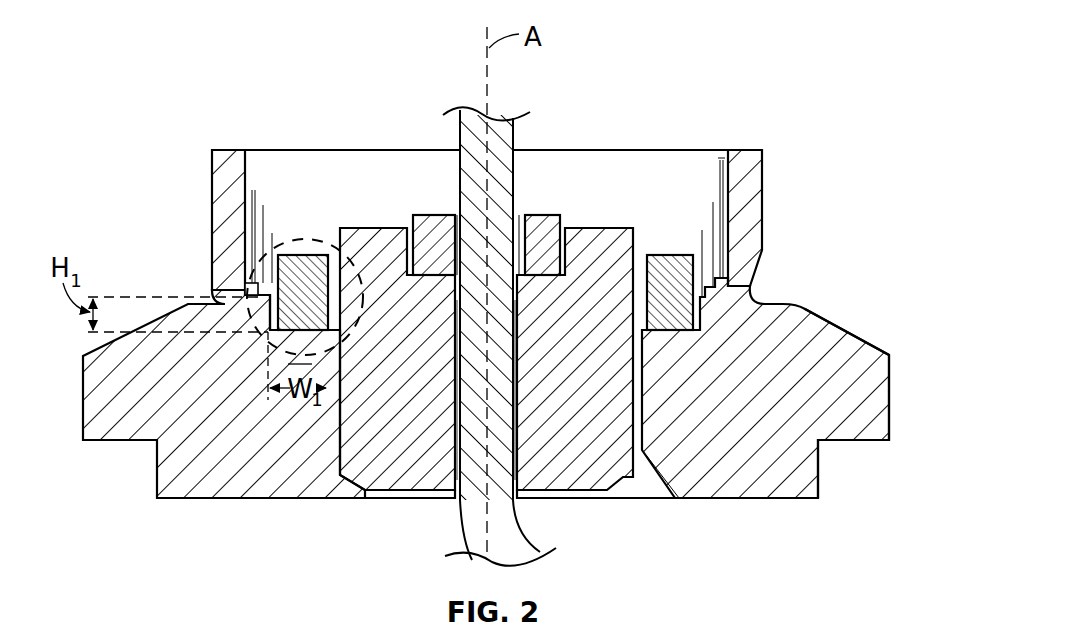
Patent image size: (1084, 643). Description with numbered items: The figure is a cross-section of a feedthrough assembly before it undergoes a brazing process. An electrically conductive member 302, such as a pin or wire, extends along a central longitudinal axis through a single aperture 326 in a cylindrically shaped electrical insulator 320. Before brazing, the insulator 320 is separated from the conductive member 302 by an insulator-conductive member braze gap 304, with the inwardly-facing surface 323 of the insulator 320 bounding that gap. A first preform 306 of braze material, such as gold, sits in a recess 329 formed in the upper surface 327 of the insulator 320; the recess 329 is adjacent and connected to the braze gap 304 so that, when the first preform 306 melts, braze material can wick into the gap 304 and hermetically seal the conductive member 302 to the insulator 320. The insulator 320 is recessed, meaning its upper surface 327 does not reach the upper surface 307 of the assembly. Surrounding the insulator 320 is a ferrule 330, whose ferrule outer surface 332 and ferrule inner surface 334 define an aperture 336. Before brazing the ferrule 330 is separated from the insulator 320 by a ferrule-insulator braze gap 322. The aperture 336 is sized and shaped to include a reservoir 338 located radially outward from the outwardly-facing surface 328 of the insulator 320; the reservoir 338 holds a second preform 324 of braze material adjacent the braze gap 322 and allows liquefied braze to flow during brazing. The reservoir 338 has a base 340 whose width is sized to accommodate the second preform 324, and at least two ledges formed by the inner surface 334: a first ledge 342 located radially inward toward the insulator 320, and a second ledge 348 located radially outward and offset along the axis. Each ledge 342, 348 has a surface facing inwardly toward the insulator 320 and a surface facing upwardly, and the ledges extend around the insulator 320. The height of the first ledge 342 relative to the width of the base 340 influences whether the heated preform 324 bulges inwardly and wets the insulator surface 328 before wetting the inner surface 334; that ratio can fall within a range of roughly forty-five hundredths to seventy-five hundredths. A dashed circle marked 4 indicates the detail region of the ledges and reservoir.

The electrically conductive member 302 is at (489, 155).
The insulator-conductive member braze gap 304 is at (458, 468).
The first preform 306 is at (541, 234).
The upper surface of feedthrough assembly 307 is at (758, 150).
The electrical insulator 320 is at (600, 292).
The ferrule-insulator braze gap 322 is at (643, 482).
The inwardly-facing surface 323 is at (514, 361).
The second preform 324 is at (265, 272).
The aperture 326 is at (522, 505).
The upper surface 327 is at (345, 226).
The outwardly-facing surface 328 is at (337, 435).
The recess 329 is at (407, 226).
The ferrule 330 is at (828, 347).
The ferrule outer surface 332 is at (898, 394).
The ferrule inner surface 334 is at (719, 173).
The aperture 336 is at (359, 176).
The reservoir 338 is at (293, 240).
The base 340 is at (688, 328).
The first ledge 342 is at (262, 302).
The second ledge 348 is at (249, 284).
The detail view circle 4 is at (356, 340).